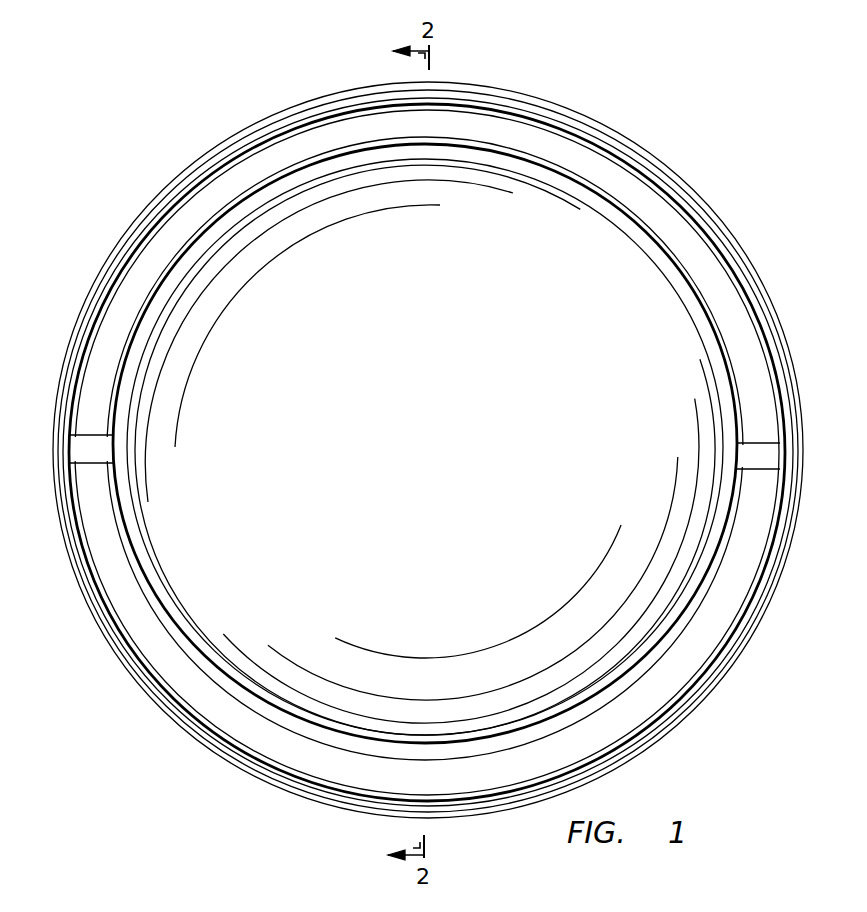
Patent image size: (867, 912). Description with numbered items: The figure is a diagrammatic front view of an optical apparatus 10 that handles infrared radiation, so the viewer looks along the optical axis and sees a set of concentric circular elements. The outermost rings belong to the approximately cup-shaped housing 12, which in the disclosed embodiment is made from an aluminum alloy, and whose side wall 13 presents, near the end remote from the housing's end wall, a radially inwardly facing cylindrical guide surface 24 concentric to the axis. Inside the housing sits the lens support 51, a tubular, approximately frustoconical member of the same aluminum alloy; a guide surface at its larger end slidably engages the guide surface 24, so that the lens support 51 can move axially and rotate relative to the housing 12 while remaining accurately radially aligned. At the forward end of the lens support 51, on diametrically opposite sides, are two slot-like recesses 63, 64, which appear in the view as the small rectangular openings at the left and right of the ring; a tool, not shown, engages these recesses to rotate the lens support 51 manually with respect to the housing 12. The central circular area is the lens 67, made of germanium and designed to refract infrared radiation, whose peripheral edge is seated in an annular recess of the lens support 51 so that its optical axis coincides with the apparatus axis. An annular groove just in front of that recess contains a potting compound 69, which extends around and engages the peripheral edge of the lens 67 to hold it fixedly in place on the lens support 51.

The optical apparatus 10 is at (428, 433).
The housing 12 is at (546, 95).
The side wall 13 is at (498, 102).
The cylindrical guide surface 24 is at (558, 146).
The lens support 51 is at (722, 299).
The slot-like recess 63 is at (92, 460).
The slot-like recess 64 is at (762, 470).
The lens 67 is at (444, 464).
The potting compound 69 is at (658, 647).